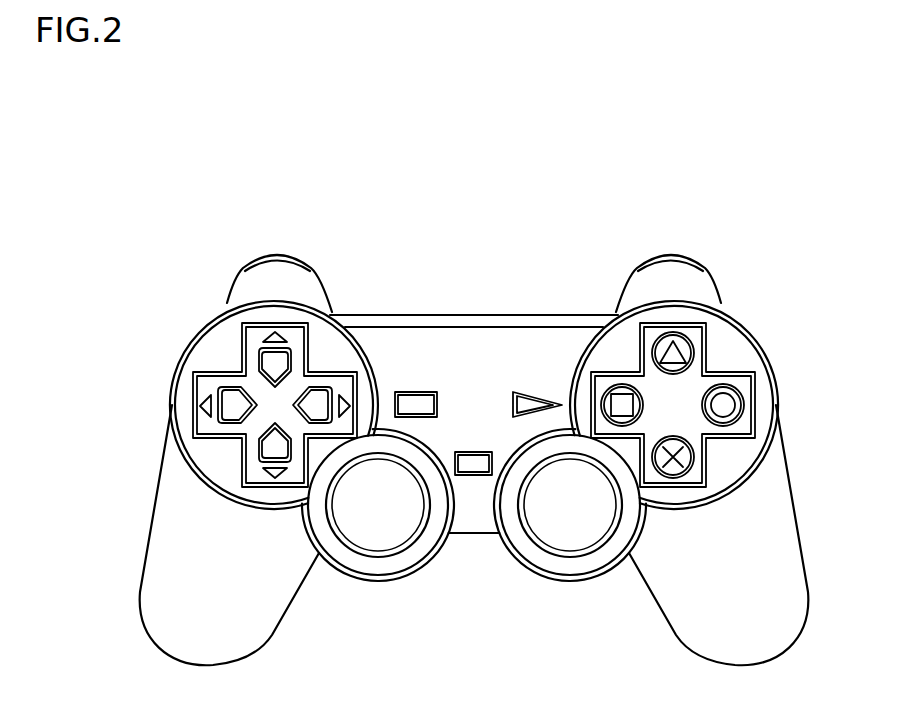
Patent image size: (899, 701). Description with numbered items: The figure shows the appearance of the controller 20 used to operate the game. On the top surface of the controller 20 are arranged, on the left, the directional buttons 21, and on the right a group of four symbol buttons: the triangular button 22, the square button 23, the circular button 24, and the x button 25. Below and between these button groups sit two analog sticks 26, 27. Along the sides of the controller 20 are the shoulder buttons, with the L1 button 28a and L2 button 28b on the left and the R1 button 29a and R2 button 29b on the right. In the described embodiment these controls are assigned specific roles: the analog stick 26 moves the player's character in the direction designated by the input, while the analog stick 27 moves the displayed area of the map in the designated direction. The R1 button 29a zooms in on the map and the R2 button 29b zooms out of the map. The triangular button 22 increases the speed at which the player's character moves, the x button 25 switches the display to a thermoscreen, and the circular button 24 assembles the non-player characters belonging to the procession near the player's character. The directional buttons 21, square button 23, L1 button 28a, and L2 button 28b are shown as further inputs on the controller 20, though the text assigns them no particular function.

The controller 20 is at (847, 172).
The directional buttons 21 is at (212, 382).
The triangular button 22 is at (687, 355).
The square button 23 is at (645, 403).
The circular button 24 is at (740, 406).
The x button 25 is at (687, 457).
The analog stick 26 is at (388, 530).
The analog stick 27 is at (578, 530).
The L1 button 28a is at (277, 253).
The L2 button 28b is at (299, 262).
The R1 button 29a is at (671, 253).
The R2 button 29b is at (693, 262).